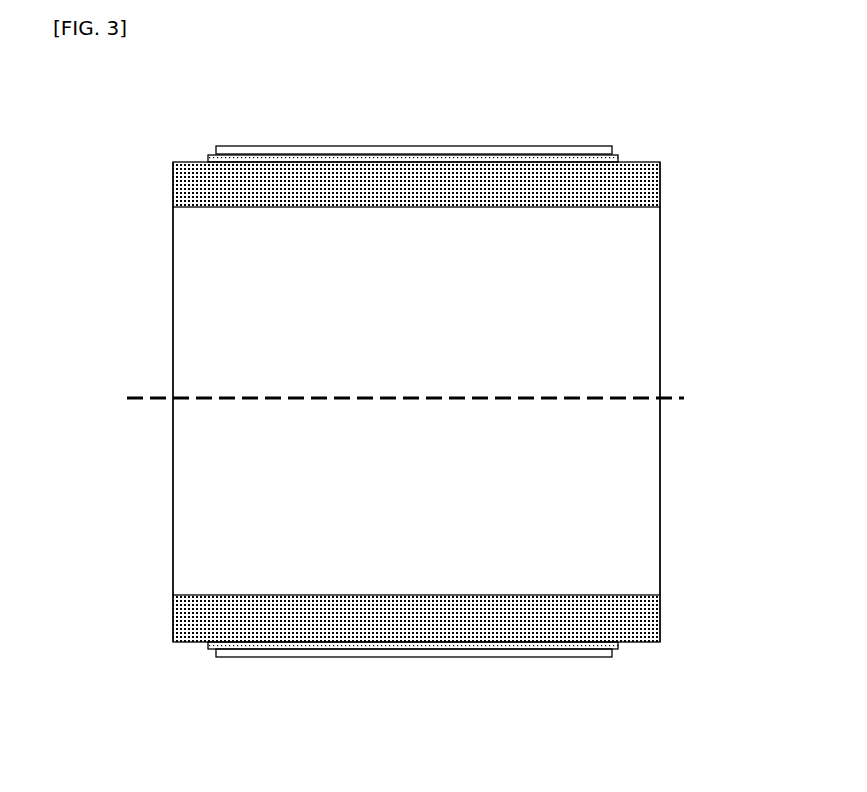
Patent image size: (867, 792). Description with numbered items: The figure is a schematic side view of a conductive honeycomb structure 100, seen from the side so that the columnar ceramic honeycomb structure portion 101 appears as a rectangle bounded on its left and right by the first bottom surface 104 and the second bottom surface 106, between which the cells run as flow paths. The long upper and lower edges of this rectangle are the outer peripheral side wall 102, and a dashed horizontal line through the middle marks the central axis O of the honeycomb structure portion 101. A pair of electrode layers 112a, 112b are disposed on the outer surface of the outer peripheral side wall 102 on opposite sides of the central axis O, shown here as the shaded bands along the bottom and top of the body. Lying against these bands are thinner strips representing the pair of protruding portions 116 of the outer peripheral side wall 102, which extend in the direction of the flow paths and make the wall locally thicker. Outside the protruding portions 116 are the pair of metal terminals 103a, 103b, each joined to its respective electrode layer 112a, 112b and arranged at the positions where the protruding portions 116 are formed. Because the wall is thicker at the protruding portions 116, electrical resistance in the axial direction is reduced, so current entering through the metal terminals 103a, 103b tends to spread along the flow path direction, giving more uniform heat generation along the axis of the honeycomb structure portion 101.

The honeycomb structure 100 is at (130, 108).
The honeycomb structure portion 101 is at (157, 311).
The outer peripheral side wall 102 is at (643, 310).
The first bottom surface 104 is at (172, 233).
The second bottom surface 106 is at (660, 222).
The electrode layer 112a is at (190, 642).
The electrode layer 112b is at (190, 160).
The protruding portions 116 is at (618, 157).
The metal terminal 103a is at (430, 657).
The metal terminal 103b is at (447, 145).
The central axis O is at (421, 398).